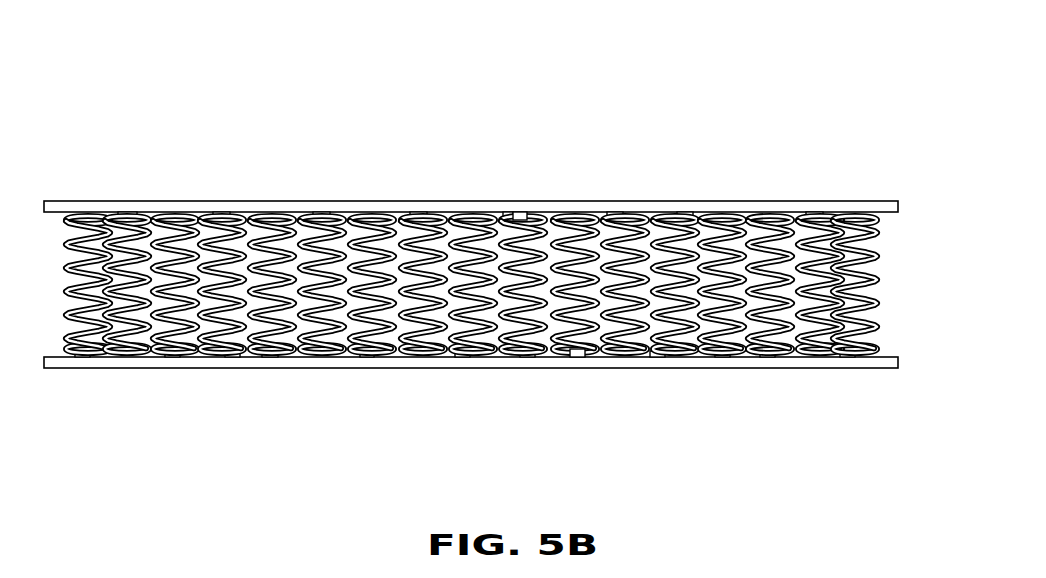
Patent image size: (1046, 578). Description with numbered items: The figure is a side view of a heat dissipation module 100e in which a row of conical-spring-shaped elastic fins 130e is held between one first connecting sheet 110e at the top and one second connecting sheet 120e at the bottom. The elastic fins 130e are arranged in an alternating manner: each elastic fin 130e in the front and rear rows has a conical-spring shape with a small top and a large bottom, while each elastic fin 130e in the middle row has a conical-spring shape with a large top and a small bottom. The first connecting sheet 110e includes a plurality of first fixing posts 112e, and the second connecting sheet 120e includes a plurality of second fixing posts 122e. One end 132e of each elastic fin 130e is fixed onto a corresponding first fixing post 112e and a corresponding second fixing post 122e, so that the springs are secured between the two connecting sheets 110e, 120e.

The heat dissipation module 100e is at (479, 281).
The first connecting sheet 110e is at (660, 207).
The first fixing post 112e is at (317, 212).
The second connecting sheet 120e is at (780, 360).
The second fixing post 122e is at (270, 357).
The elastic fin 130e is at (348, 222).
The end 132e is at (517, 212).